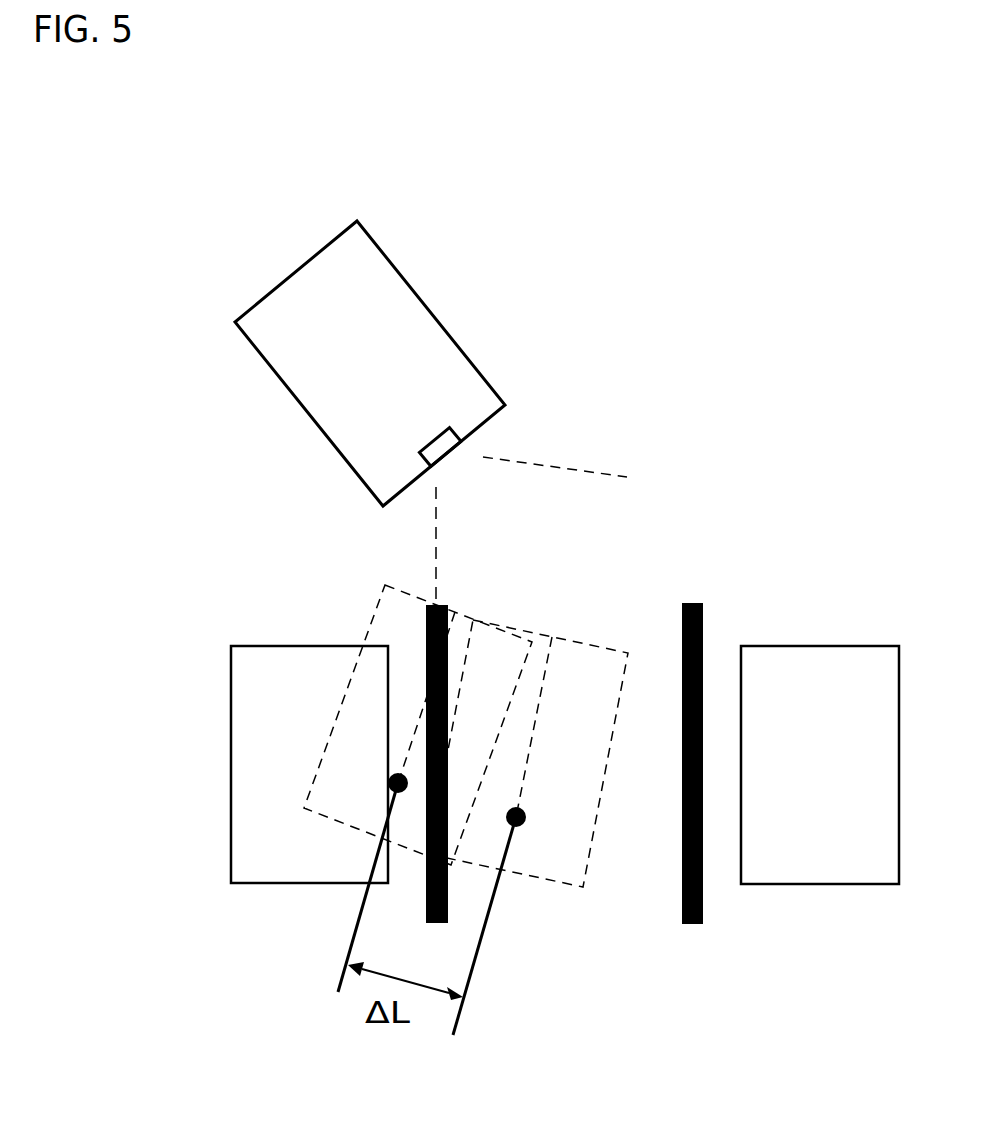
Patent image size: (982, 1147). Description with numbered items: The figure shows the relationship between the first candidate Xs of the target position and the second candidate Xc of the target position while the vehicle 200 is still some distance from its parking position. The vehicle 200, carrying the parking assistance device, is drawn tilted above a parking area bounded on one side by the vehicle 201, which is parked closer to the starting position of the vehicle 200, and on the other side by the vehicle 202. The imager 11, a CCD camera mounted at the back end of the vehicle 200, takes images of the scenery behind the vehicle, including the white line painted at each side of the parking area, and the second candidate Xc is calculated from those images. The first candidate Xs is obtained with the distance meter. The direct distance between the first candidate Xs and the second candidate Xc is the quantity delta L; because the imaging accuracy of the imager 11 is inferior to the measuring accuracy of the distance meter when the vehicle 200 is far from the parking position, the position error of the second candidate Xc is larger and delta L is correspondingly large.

The vehicle 200 is at (393, 262).
The imager 11 is at (455, 435).
The vehicle 202 is at (282, 646).
The vehicle 201 is at (773, 646).
The second candidate of the target position Xc is at (388, 783).
The first candidate of the target position Xs is at (518, 827).